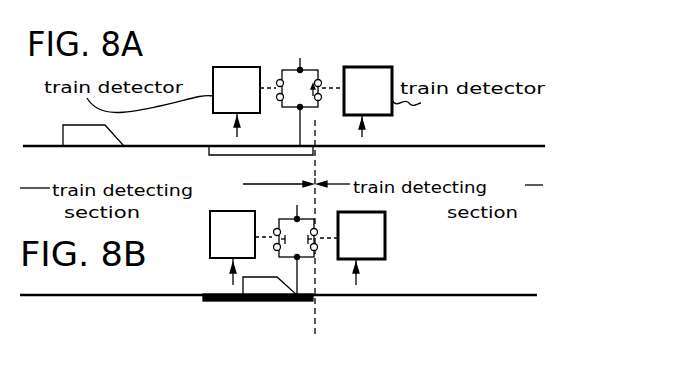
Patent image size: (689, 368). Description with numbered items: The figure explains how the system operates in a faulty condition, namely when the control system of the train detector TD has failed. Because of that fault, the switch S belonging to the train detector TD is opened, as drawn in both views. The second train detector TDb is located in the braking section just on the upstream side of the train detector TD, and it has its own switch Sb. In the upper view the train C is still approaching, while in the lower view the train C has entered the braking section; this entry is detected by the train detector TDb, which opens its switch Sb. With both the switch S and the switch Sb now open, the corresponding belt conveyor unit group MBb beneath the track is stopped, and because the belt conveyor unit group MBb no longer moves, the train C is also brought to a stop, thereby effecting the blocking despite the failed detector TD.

In FIG. 8A, the train detector TDb is at (236, 90).
In FIG. 8B, the train detector TDb is at (232, 234).
In FIG. 8A, the train detector TD is at (368, 91).
In FIG. 8B, the train detector TD is at (361, 235).
In FIG. 8A, the switch Sb is at (278, 80).
In FIG. 8B, the switch Sb is at (275, 229).
In FIG. 8A, the switch S is at (321, 80).
In FIG. 8B, the switch S is at (318, 229).
In FIG. 8A, the belt conveyor unit group MBb is at (261, 162).
In FIG. 8B, the belt conveyor unit group MBb is at (258, 314).
In FIG. 8A, the train C is at (93, 135).
In FIG. 8B, the train C is at (270, 286).